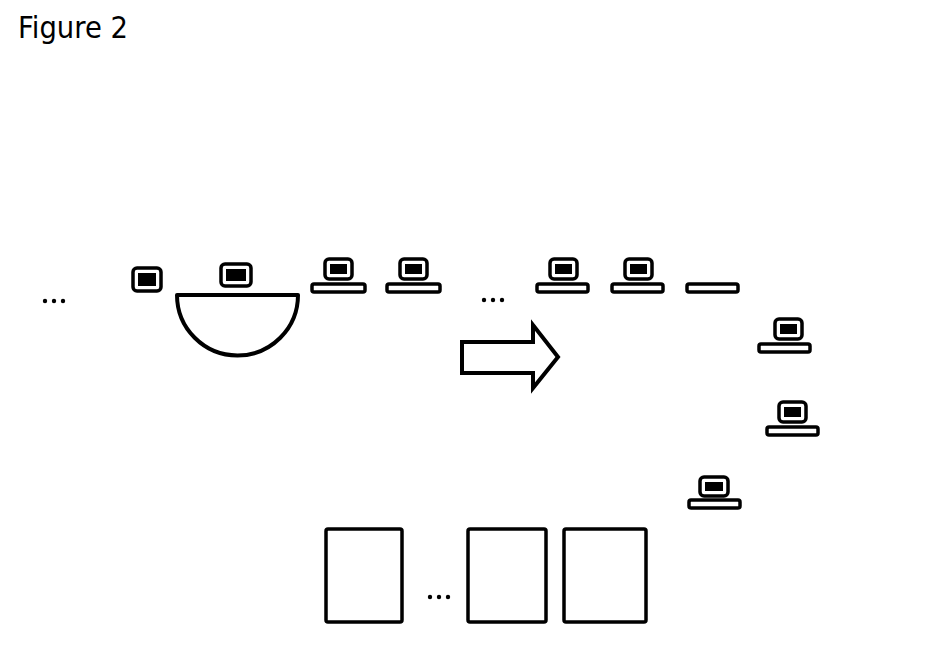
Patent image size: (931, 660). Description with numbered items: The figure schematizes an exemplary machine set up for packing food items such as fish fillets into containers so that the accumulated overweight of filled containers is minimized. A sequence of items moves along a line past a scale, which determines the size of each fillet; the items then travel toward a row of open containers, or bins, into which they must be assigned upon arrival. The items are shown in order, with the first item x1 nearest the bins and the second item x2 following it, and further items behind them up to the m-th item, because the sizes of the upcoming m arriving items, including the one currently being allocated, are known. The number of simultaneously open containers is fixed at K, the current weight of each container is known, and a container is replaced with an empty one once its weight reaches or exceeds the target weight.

The first item x1 is at (714, 475).
The second item x2 is at (792, 403).
The element scale is at (237, 325).